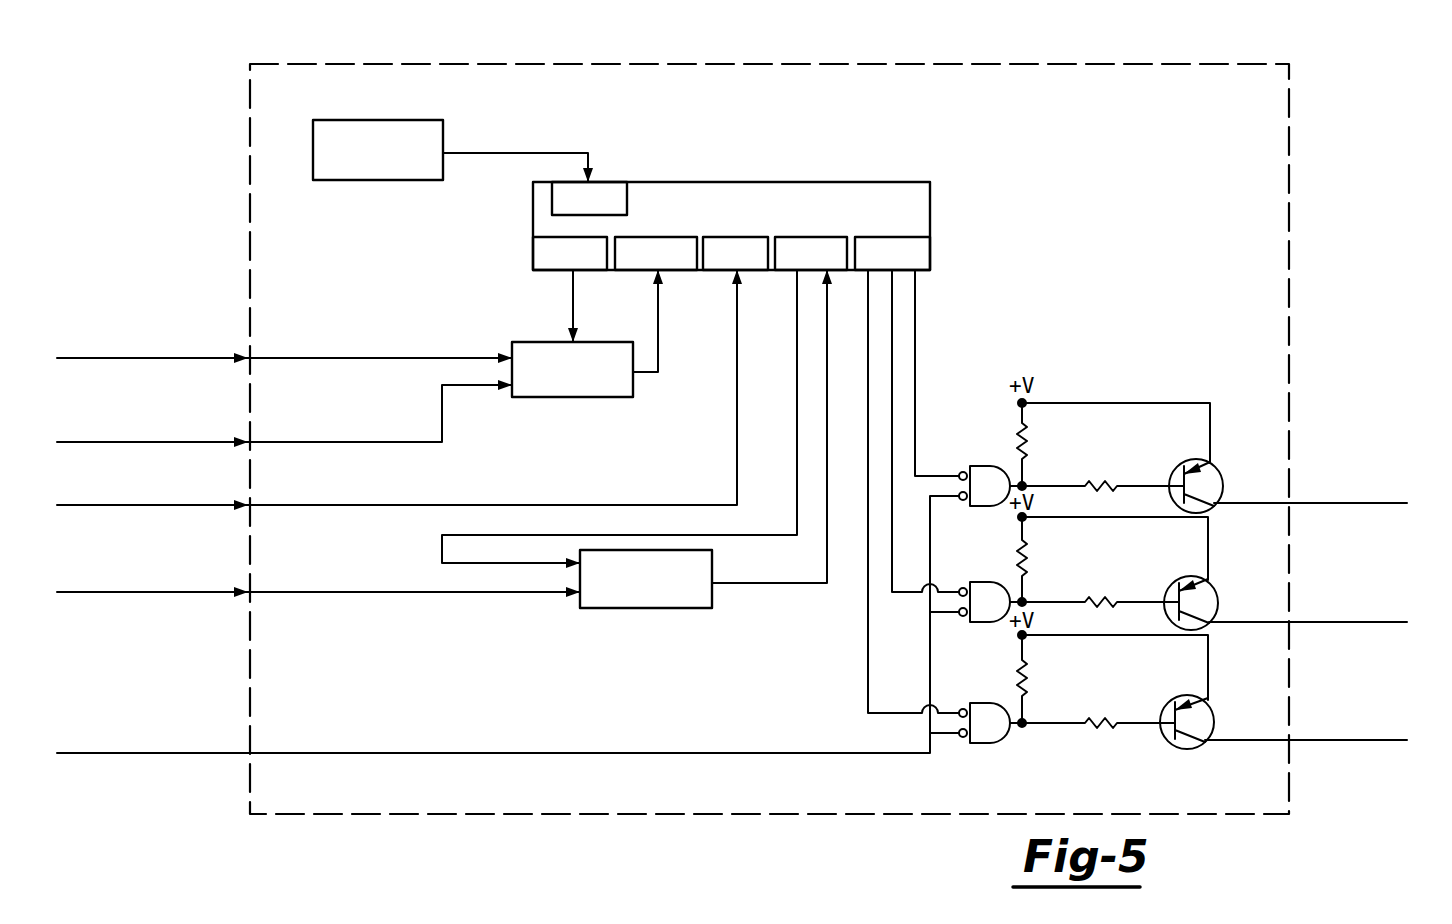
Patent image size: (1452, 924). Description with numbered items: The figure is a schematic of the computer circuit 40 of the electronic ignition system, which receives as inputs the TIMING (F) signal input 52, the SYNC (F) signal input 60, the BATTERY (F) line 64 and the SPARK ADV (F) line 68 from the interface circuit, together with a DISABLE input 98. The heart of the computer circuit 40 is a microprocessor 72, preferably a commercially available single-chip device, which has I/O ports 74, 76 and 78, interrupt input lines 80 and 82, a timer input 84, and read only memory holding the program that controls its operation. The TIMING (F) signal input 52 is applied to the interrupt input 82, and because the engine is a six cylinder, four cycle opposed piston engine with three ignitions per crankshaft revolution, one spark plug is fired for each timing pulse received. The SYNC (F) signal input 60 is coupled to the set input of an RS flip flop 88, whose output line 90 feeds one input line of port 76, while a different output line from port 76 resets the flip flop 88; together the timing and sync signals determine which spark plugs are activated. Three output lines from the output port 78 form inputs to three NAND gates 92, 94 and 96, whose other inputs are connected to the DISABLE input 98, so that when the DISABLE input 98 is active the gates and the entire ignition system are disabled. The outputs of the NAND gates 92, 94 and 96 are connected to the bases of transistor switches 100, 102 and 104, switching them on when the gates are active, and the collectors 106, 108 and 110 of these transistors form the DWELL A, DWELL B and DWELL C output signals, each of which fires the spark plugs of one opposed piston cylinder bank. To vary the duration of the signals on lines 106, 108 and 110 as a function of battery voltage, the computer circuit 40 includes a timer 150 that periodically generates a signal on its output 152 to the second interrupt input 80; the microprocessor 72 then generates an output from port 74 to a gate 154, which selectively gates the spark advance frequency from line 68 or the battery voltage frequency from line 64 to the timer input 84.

The computer circuit 40 is at (300, 63).
The TIMING (F) signal input 52 is at (313, 505).
The SYNC (F) signal input 60 is at (298, 592).
The BATTERY (F) line 64 is at (305, 442).
The SPARK ADV (F) line 68 is at (338, 358).
The microprocessor 72 is at (930, 215).
The I/O port 74 is at (533, 252).
The I/O port 76 is at (805, 237).
The output port 78 is at (876, 237).
The interrupt input line 80 is at (627, 200).
The interrupt input line 82 is at (732, 237).
The timer input 84 is at (655, 237).
The RS flip flop 88 is at (678, 608).
The output line 90 is at (770, 583).
The NAND gate 92 is at (985, 466).
The NAND gate 94 is at (985, 582).
The NAND gate 96 is at (980, 703).
The DISABLE input 98 is at (312, 753).
The transistor switch 100 is at (1210, 462).
The transistor switch 102 is at (1205, 580).
The transistor switch 104 is at (1205, 702).
The collector output 106 is at (1370, 503).
The collector output 108 is at (1368, 622).
The collector output 110 is at (1350, 740).
The timer 150 is at (365, 180).
The timer output 152 is at (510, 153).
The gate 154 is at (605, 397).